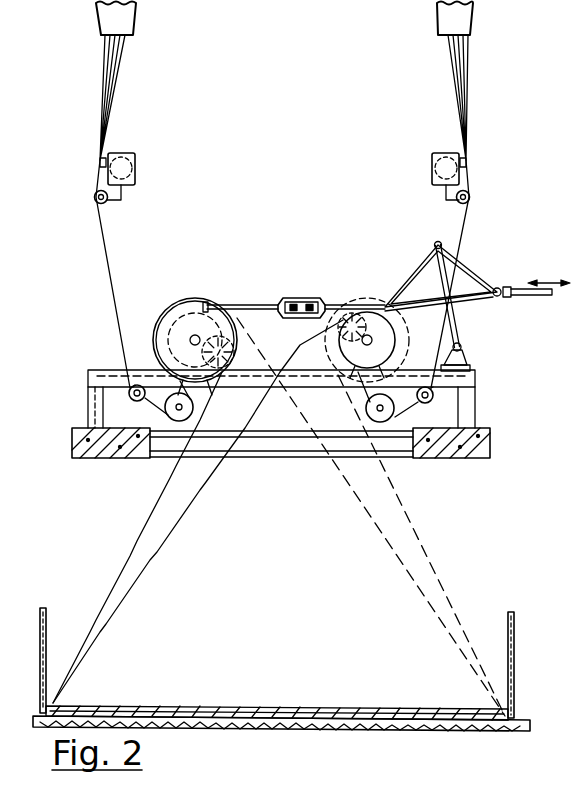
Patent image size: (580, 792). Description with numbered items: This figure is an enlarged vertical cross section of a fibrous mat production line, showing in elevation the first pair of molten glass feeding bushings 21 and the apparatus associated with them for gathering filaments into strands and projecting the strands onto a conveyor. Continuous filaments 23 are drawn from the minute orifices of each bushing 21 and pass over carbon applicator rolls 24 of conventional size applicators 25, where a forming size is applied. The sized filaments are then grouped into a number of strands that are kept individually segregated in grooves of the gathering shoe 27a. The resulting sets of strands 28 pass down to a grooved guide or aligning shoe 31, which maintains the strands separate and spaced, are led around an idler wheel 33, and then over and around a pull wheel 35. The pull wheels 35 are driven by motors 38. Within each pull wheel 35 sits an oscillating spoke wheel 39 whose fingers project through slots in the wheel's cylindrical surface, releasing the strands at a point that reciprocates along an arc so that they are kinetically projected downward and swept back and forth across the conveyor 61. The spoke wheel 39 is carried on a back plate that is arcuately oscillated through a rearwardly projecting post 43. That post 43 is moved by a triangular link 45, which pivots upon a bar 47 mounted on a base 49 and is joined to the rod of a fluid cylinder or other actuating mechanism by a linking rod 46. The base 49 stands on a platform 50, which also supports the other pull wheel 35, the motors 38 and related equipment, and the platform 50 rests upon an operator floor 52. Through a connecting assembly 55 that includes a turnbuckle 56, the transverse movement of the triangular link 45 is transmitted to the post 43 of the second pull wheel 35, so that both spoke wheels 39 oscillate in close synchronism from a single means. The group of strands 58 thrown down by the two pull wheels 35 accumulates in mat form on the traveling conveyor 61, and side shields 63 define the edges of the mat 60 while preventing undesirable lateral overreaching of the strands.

The molten glass feeding bushing 21 is at (134, 14).
The continuous filaments 23 is at (113, 58).
The carbon applicator roll 24 is at (104, 158).
The size applicator 25 is at (136, 157).
The gathering shoe 27a is at (108, 199).
The strands 28 is at (104, 224).
The guide or aligning shoe 31 is at (129, 392).
The idler wheel 33 is at (166, 414).
The pull wheel 35 is at (162, 322).
The motor 38 is at (242, 314).
The oscillating spoke wheel 39 is at (186, 302).
The post 43 is at (213, 335).
The triangular link 45 is at (436, 246).
The linking rod 46 is at (527, 298).
The bar 47 is at (454, 300).
The base 49 is at (465, 360).
The platform 50 is at (476, 374).
The operator floor 52 is at (491, 432).
The connecting assembly 55 is at (253, 302).
The turnbuckle 56 is at (281, 297).
The group of strands 58 is at (150, 482).
The mat 60 is at (270, 706).
The conveyor 61 is at (527, 719).
The side shield 63 is at (44, 607).